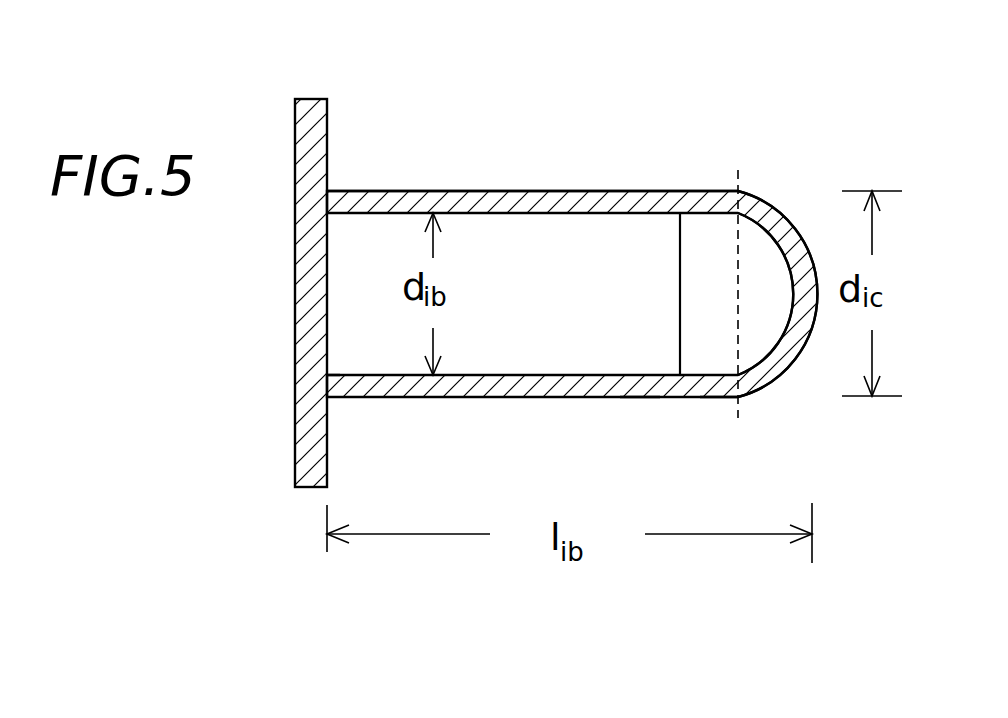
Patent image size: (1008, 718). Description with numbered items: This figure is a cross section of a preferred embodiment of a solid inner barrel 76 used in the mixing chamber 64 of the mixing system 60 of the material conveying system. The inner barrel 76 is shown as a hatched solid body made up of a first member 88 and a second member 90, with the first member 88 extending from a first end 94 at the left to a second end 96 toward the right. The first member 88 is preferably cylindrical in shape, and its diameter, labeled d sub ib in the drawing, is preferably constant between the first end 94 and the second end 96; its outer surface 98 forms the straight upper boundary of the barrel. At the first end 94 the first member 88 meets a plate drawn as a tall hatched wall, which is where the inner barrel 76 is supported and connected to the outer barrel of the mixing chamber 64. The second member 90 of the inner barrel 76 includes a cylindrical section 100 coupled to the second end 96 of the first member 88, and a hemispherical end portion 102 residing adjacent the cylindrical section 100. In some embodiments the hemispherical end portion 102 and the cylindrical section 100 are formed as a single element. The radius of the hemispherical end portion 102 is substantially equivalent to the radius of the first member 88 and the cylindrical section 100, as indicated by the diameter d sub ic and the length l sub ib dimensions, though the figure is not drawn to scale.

The mixing system 60 is at (280, 75).
The inner barrel 76 is at (617, 252).
The first member 88 is at (485, 363).
The first end 94 is at (330, 398).
The second end 96 is at (643, 397).
The outer surface 98 is at (493, 191).
The cylindrical section 100 is at (707, 226).
The second member 90 is at (715, 397).
The mixing chamber 64 is at (812, 185).
The hemispherical end portion 102 is at (758, 330).